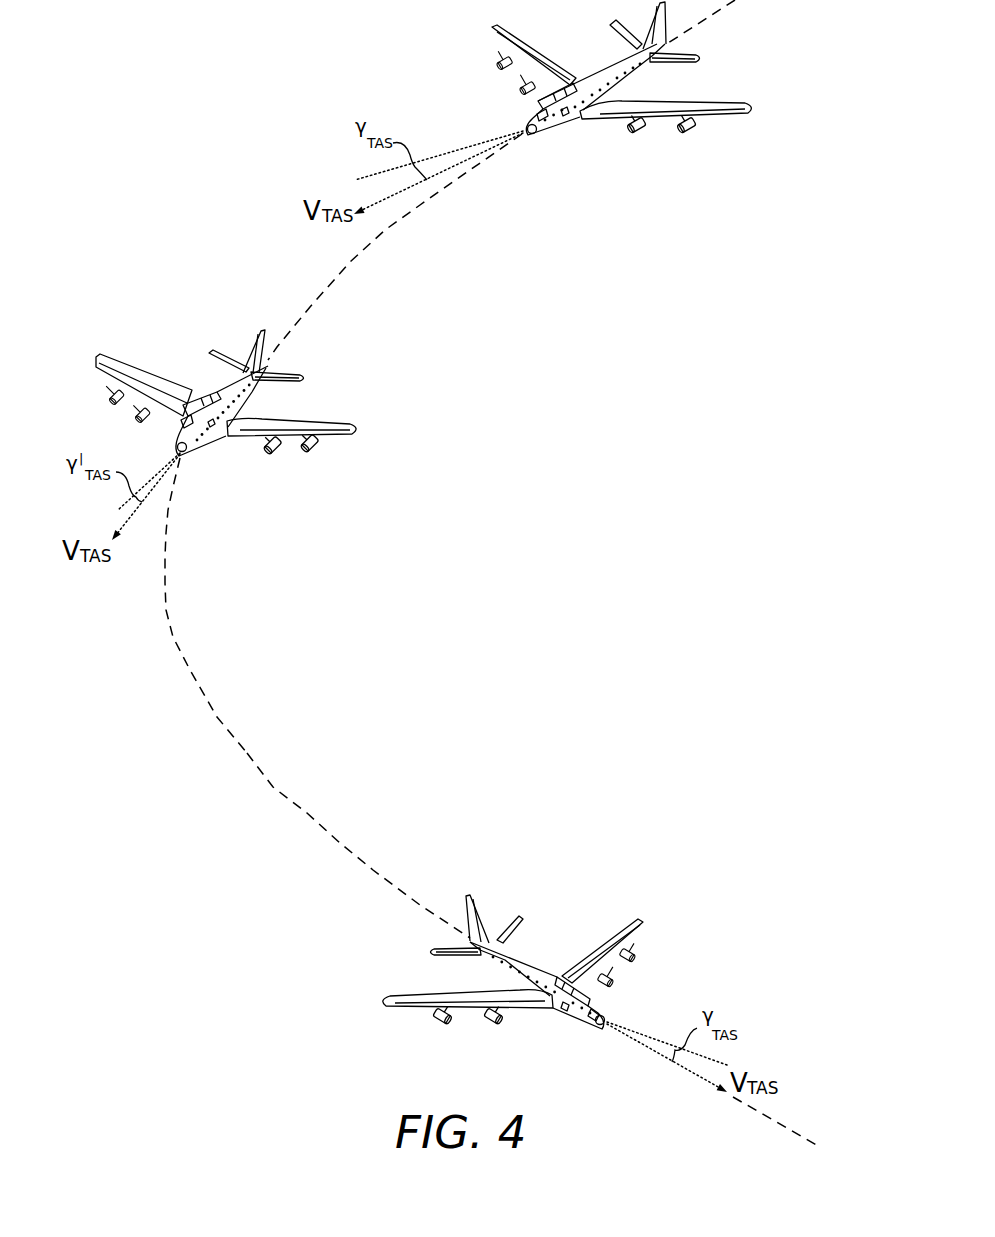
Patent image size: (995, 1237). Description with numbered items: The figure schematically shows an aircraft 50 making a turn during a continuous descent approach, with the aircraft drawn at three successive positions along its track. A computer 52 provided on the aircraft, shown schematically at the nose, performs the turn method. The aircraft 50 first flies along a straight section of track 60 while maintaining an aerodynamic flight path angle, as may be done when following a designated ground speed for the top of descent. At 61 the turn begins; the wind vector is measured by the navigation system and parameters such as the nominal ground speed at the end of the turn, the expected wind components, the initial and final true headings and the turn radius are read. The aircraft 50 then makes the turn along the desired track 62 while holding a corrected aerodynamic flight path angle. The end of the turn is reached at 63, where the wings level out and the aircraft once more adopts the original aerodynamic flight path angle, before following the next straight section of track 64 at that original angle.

The aircraft 50 is at (603, 65).
The computer 52 is at (533, 112).
The straight section of track 60 is at (730, 3).
The track point where turn begins 61 is at (355, 262).
The desired track through the turn 62 is at (170, 595).
The track point at end of turn 63 is at (360, 858).
The next straight section of track 64 is at (785, 1125).